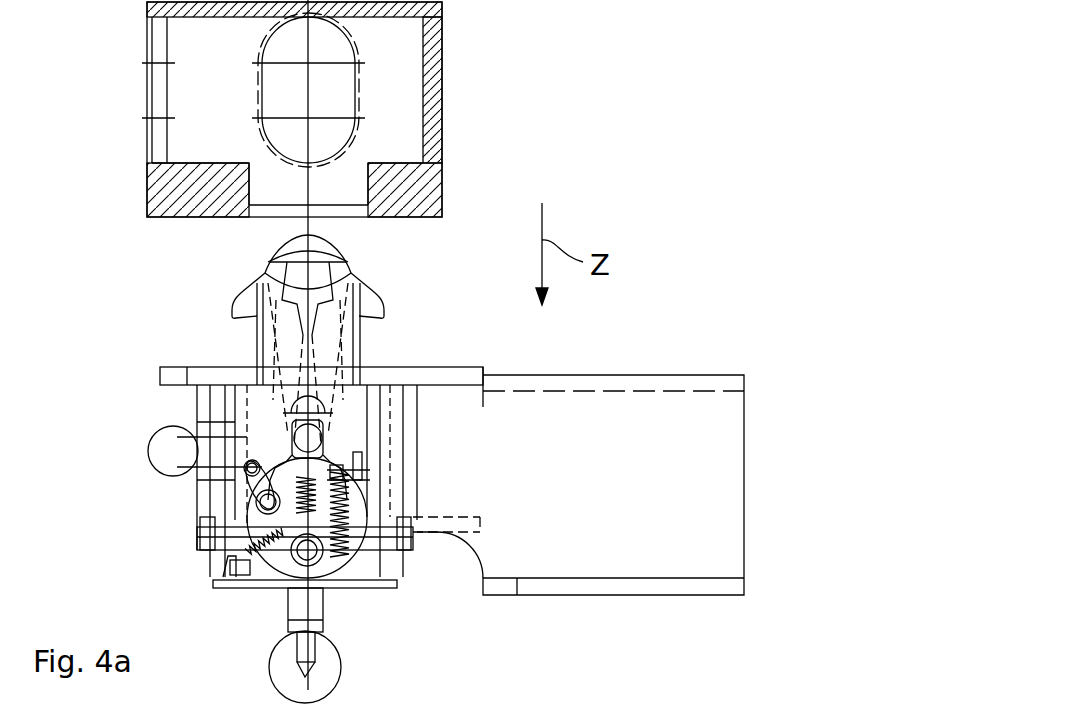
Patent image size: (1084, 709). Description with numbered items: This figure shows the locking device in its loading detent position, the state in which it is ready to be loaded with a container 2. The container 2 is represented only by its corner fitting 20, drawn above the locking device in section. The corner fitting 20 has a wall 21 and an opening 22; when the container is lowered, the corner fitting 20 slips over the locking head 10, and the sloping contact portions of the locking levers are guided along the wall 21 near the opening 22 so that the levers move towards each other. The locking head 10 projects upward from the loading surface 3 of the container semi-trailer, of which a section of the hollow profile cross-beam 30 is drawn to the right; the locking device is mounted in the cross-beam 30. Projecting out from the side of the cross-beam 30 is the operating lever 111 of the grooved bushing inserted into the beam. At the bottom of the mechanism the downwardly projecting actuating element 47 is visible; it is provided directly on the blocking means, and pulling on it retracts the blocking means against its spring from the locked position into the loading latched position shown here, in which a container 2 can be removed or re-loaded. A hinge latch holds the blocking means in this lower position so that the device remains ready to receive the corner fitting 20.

The container 2 is at (360, 144).
The corner fitting 20 is at (437, 126).
The wall 21 is at (202, 197).
The opening 22 is at (356, 190).
The locking head 10 is at (222, 315).
The loading surface 3 is at (448, 485).
The cross-beam 30 is at (585, 457).
The operating lever 111 is at (170, 451).
The actuating element 47 is at (312, 683).